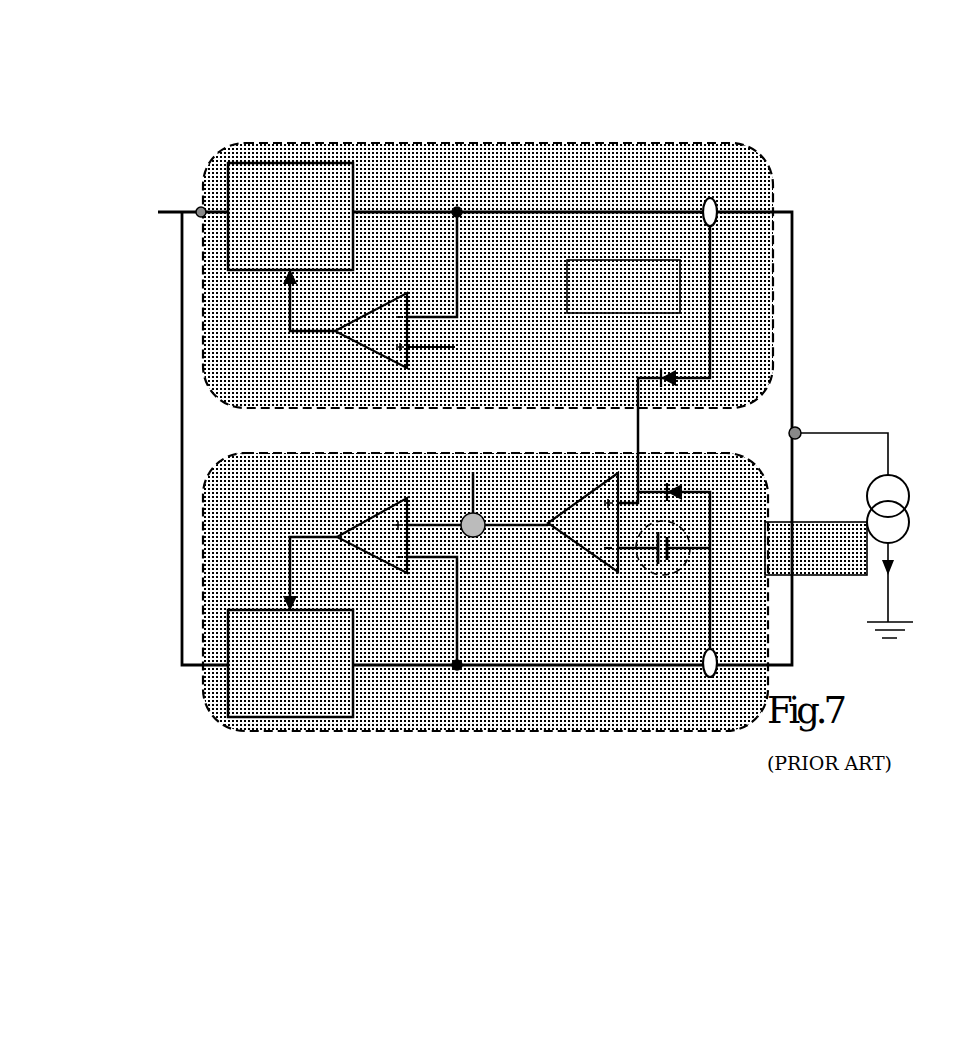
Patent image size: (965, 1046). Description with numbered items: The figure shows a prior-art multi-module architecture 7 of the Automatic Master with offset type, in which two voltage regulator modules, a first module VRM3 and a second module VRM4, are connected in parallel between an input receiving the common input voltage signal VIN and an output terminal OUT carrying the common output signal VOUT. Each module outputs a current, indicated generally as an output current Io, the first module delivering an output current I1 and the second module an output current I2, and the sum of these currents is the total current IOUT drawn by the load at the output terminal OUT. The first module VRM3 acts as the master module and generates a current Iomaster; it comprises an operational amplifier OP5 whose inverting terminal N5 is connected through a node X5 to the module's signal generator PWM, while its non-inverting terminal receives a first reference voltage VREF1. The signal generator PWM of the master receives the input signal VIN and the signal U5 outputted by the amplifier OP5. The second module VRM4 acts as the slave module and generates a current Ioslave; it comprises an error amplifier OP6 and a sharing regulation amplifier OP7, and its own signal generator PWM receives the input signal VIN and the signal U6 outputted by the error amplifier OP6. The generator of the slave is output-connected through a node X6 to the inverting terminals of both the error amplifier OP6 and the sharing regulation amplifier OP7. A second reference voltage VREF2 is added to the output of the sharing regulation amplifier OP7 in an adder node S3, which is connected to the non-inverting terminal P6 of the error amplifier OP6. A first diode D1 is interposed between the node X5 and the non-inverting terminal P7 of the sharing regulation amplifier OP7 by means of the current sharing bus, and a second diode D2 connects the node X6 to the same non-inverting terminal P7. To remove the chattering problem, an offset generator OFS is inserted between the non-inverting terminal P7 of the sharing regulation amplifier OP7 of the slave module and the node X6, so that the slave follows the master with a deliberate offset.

The first module VRM3 is at (488, 275).
The second module VRM4 is at (485, 592).
The signal generator PWM is at (290, 440).
The common input voltage signal VIN is at (187, 421).
The operational amplifier OP5 is at (395, 338).
The inverting terminal N5 is at (384, 318).
The first reference voltage VREF1 is at (462, 357).
The signal outputted by the amplifier OP5 U5 is at (293, 300).
The node X5 is at (442, 220).
The output current I1 is at (730, 193).
The current Io_master Iomaster is at (628, 384).
The first diode D1 is at (664, 364).
The second diode D2 is at (674, 556).
The sharing regulation amplifier OP7 is at (551, 522).
The non-inverting terminal P7 is at (599, 503).
The offset generator OFS is at (657, 566).
The adder node S3 is at (453, 523).
The second reference voltage VREF2 is at (510, 492).
The error amplifier OP6 is at (372, 534).
The non-inverting terminal P6 is at (387, 527).
The signal outputted by the error amplifier OP6 U6 is at (294, 574).
The node X6 is at (443, 670).
The output current I2 is at (730, 683).
The output terminal OUT is at (771, 434).
The common output signal VOUT is at (844, 438).
The output current sum IOUT is at (915, 556).
The current Io_slave Ioslave is at (721, 516).
The output current Io is at (946, 273).
The multi-module architecture 7 is at (257, 768).